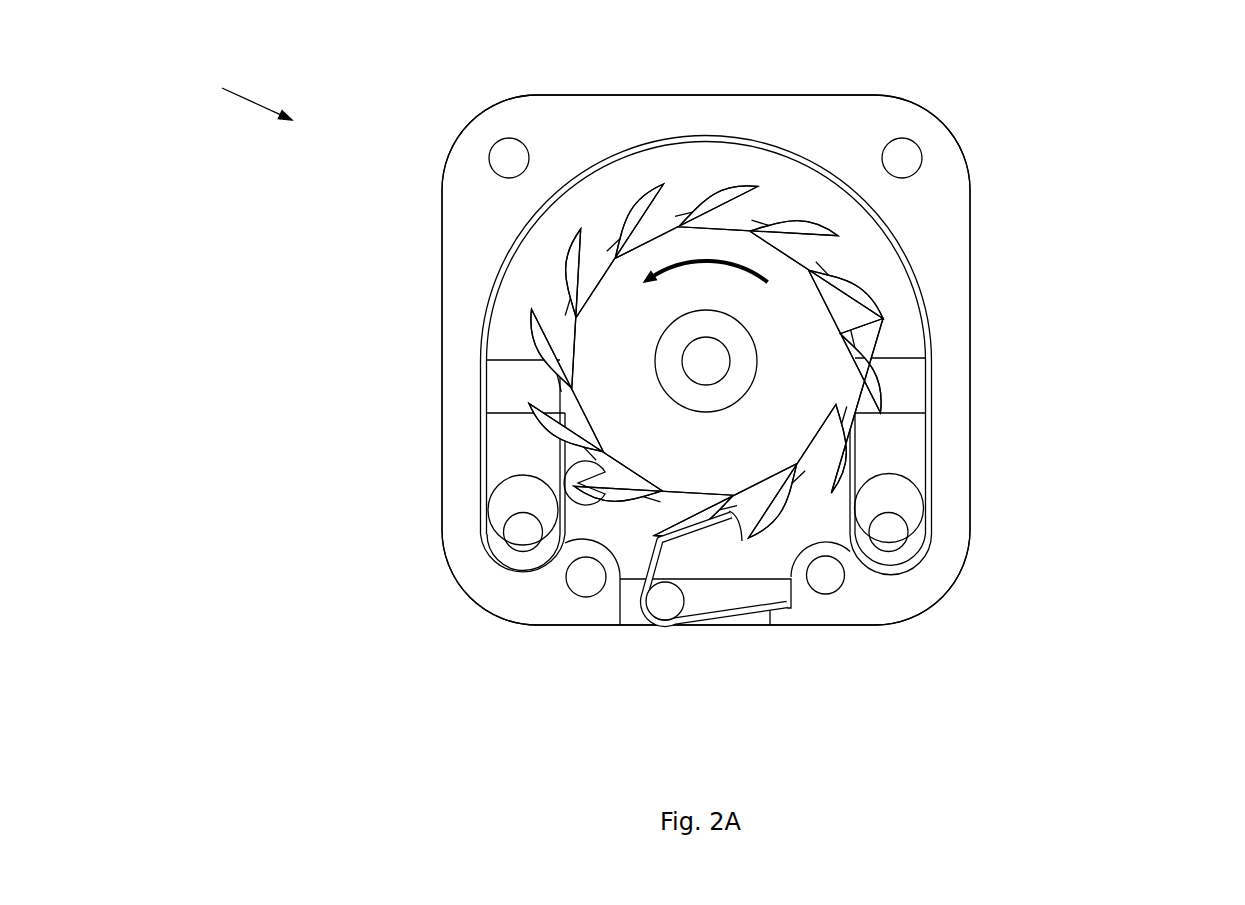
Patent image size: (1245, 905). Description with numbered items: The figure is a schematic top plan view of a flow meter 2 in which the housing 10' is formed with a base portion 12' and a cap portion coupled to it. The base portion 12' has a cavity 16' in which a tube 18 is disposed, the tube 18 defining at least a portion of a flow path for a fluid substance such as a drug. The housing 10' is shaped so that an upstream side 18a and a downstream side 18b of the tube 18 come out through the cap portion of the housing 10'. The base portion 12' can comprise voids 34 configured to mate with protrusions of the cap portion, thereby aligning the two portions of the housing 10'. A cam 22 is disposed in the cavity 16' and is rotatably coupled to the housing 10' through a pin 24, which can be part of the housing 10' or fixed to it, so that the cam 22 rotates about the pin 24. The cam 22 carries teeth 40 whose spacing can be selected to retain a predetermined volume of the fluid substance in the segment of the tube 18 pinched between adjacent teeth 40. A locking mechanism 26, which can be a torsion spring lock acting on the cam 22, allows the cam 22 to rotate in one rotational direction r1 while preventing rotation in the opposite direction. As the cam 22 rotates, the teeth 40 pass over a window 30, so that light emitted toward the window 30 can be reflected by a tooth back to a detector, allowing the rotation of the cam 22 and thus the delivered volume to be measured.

The flow meter 2 is at (244, 92).
The housing 10' is at (771, 360).
The base portion 12' is at (706, 334).
The cavity 16' is at (727, 454).
The tube 18 is at (887, 280).
The upstream side 18a is at (939, 556).
The downstream side 18b is at (471, 554).
The cam 22 is at (840, 368).
The pin 24 is at (703, 362).
The locking mechanism 26 is at (740, 644).
The window 30 is at (585, 525).
The voids 34 is at (926, 138).
The teeth 40 is at (675, 184).
The rotational direction r1 is at (722, 260).